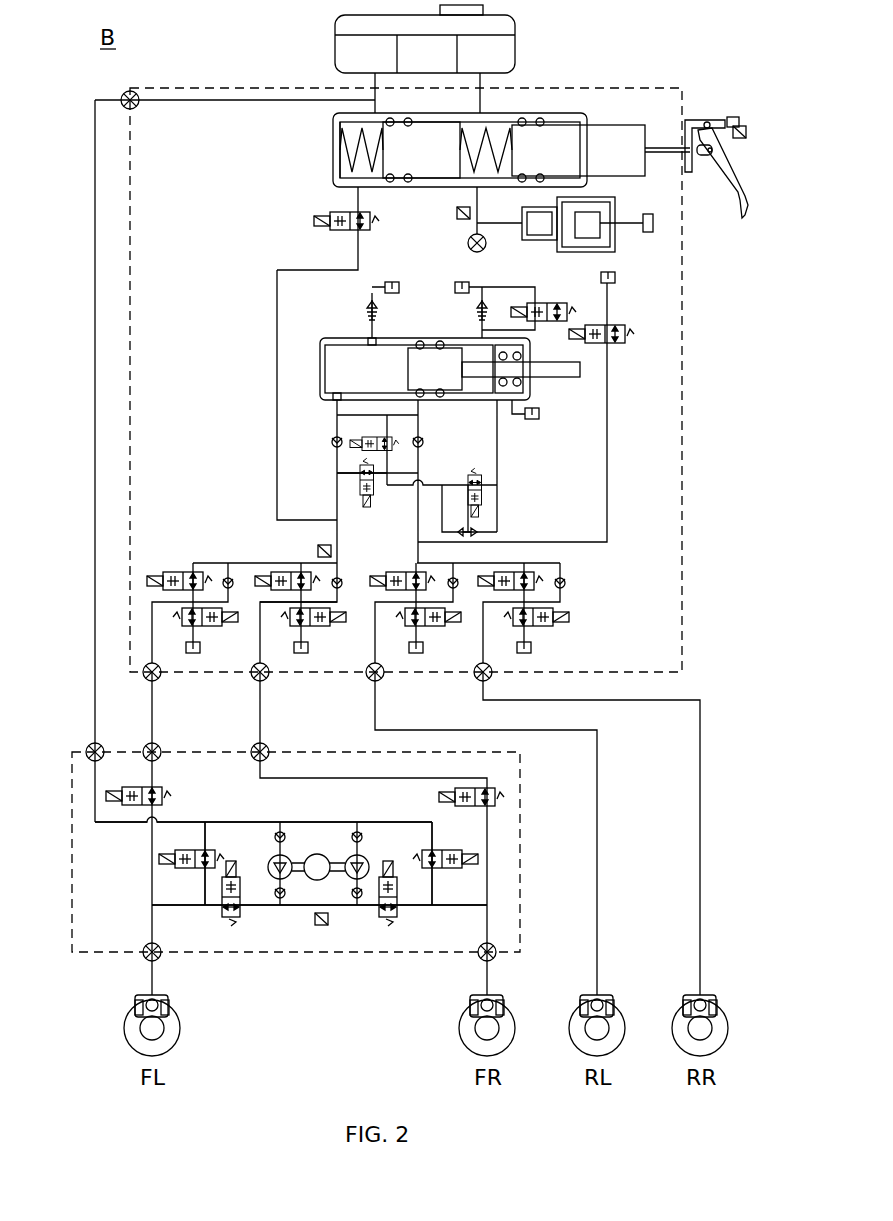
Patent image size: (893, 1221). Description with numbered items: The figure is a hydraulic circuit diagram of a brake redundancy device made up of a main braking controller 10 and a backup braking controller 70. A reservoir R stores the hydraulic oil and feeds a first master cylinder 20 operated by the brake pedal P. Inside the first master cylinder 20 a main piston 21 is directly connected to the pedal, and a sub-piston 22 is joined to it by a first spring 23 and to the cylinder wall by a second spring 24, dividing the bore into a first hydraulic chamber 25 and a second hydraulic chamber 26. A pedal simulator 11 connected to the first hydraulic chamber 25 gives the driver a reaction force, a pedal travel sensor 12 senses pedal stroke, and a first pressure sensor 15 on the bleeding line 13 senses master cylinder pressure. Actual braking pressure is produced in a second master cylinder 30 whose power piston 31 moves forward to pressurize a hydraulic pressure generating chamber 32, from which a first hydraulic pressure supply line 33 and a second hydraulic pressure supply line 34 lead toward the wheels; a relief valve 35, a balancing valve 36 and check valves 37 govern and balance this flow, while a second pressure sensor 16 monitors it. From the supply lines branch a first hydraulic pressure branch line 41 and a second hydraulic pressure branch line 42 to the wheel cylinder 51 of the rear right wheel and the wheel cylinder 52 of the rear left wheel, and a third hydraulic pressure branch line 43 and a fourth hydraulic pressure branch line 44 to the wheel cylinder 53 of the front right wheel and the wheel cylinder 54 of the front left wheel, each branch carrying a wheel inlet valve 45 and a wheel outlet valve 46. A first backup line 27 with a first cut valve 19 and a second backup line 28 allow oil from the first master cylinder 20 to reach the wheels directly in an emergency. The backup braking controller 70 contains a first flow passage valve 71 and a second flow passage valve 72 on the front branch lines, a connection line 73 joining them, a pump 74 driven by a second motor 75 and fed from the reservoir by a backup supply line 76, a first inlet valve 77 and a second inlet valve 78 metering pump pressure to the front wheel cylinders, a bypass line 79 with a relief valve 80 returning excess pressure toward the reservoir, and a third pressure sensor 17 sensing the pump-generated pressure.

The reservoir R is at (515, 24).
The brake pedal P is at (746, 195).
The main braking controller 10 is at (682, 520).
The pedal simulator 11 is at (615, 245).
The pedal travel sensor 12 is at (738, 125).
The bleeding line 13 is at (477, 210).
The first pressure sensor 15 is at (457, 213).
The second pressure sensor 16 is at (318, 549).
The third pressure sensor 17 is at (321, 926).
The first cut valve 19 is at (617, 332).
The first master cylinder 20 is at (333, 122).
The main piston 21 is at (598, 133).
The sub-piston 22 is at (430, 137).
The first spring 23 is at (478, 137).
The second spring 24 is at (342, 152).
The first hydraulic chamber 25 is at (497, 182).
The second hydraulic chamber 26 is at (342, 177).
The first backup line 27 is at (607, 437).
The second backup line 28 is at (277, 337).
The second master cylinder 30 is at (343, 341).
The power piston 31 is at (428, 351).
The hydraulic pressure generating chamber 32 is at (325, 366).
The first hydraulic pressure supply line 33 is at (418, 510).
The second hydraulic pressure supply line 34 is at (337, 508).
The relief valve 35 is at (395, 440).
The balancing valve 36 is at (352, 482).
The check valves 37 is at (332, 442).
The first hydraulic pressure branch line 41 is at (562, 600).
The second hydraulic pressure branch line 42 is at (328, 606).
The third hydraulic pressure branch line 43 is at (332, 622).
The fourth hydraulic pressure branch line 44 is at (175, 623).
The wheel inlet valve 45 is at (176, 572).
The wheel outlet valve 46 is at (215, 628).
The wheel cylinder of rear right wheel 51 is at (688, 997).
The wheel cylinder of rear left wheel 52 is at (586, 997).
The wheel cylinder of front right wheel 53 is at (478, 997).
The wheel cylinder of front left wheel 54 is at (138, 997).
The backup braking controller 70 is at (72, 851).
The first flow passage valve 71 is at (480, 788).
The second flow passage valve 72 is at (162, 793).
The connection line 73 is at (283, 905).
The pump 74 is at (278, 834).
The second motor 75 is at (318, 854).
The backup supply line 76 is at (95, 700).
The first inlet valve 77 is at (397, 917).
The second inlet valve 78 is at (240, 917).
The bypass line 79 is at (432, 885).
The relief valve 80 is at (462, 852).